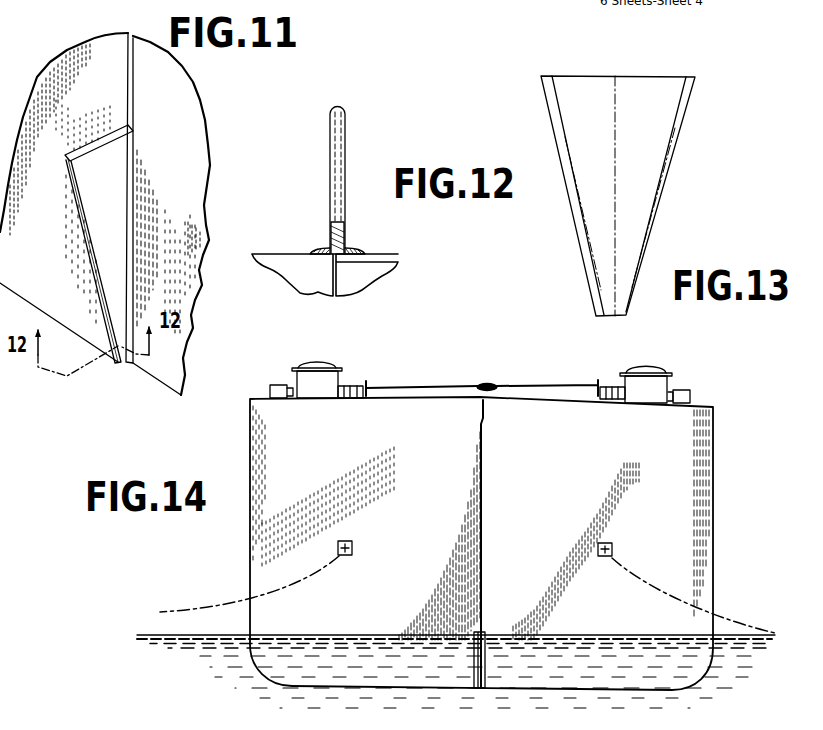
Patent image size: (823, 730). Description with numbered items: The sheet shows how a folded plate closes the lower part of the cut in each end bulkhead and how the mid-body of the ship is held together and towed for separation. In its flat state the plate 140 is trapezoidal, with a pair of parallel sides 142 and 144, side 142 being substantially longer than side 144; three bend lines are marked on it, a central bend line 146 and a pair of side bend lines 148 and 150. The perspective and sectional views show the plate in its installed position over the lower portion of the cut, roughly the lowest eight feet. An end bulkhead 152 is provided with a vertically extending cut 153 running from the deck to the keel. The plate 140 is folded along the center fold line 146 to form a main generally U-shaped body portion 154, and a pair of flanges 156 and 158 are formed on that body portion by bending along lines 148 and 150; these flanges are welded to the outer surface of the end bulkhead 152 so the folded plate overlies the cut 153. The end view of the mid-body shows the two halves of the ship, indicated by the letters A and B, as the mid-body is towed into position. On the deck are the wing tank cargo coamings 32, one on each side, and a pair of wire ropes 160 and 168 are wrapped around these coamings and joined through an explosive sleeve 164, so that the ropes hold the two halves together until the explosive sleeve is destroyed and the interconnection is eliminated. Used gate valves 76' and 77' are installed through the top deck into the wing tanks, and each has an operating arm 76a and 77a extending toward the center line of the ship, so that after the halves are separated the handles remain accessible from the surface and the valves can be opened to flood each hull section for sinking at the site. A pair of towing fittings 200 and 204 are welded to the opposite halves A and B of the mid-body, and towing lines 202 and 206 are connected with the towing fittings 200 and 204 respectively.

In FIG. 14, the wing tank cargo coamings 32 is at (314, 373).
In FIG. 14, the gate valve 76' is at (266, 372).
In FIG. 14, the gate valve 77' is at (702, 386).
In FIG. 14, the operating arm 76a is at (352, 400).
In FIG. 14, the operating arm 77a is at (607, 404).
In FIG. 11, the plate 140 is at (100, 212).
In FIG. 12, the plate 140 is at (347, 135).
In FIG. 13, the plate 140 is at (653, 78).
In FIG. 14, the plate 140 is at (487, 630).
In FIG. 13, the side 142 is at (583, 76).
In FIG. 13, the side 144 is at (620, 316).
In FIG. 13, the central bend line 146 is at (618, 148).
In FIG. 13, the side bend line 148 is at (588, 118).
In FIG. 13, the side bend line 150 is at (676, 143).
In FIG. 11, the end bulkhead 152 is at (188, 108).
In FIG. 12, the end bulkhead 152 is at (386, 259).
In FIG. 14, the end bulkhead 152 is at (700, 499).
In FIG. 11, the cut 153 is at (130, 66).
In FIG. 12, the cut 153 is at (340, 269).
In FIG. 14, the cut 153 is at (485, 515).
In FIG. 11, the main body portion 154 is at (90, 149).
In FIG. 11, the flange 156 is at (125, 122).
In FIG. 12, the flange 156 is at (314, 252).
In FIG. 11, the flange 158 is at (140, 150).
In FIG. 12, the flange 158 is at (350, 252).
In FIG. 14, the wire rope 160 is at (370, 386).
In FIG. 14, the explosive sleeve 164 is at (484, 384).
In FIG. 14, the wire rope 168 is at (578, 385).
In FIG. 14, the towing fitting 200 is at (352, 550).
In FIG. 14, the towing line 202 is at (345, 576).
In FIG. 14, the towing fitting 204 is at (613, 550).
In FIG. 14, the towing line 206 is at (664, 598).
In FIG. 14, the half of the mid-body A is at (270, 452).
In FIG. 14, the half of the mid-body B is at (698, 440).